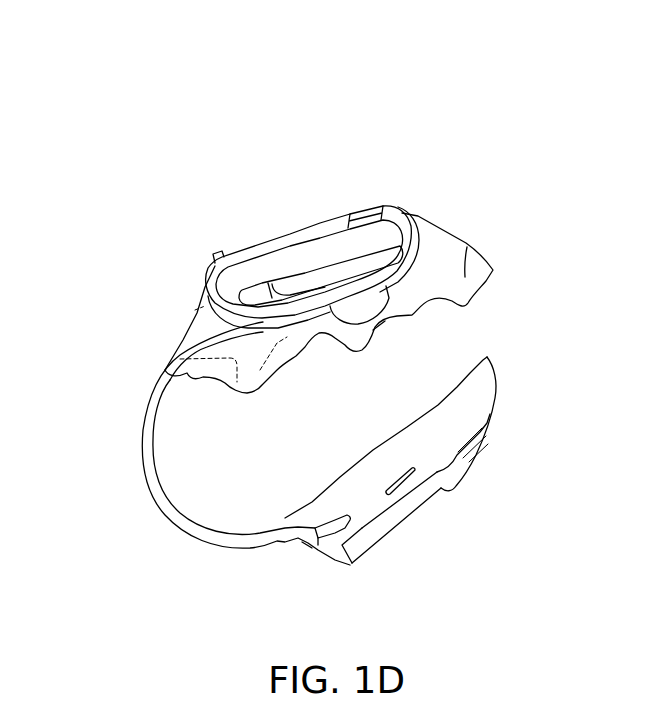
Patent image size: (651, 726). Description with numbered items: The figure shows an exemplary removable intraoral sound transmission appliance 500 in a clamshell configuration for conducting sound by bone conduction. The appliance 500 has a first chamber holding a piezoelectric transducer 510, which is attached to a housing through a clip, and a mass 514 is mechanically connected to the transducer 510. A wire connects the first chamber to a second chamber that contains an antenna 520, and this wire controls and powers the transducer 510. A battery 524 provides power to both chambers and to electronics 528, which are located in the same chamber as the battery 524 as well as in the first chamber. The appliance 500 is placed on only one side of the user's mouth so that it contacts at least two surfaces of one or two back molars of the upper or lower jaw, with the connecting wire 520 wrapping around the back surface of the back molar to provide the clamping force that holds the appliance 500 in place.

The removable intraoral sound transmission appliance 500 is at (492, 60).
The piezoelectric transducer 510 is at (400, 323).
The mass 514 is at (257, 271).
The antenna 520 is at (142, 462).
The battery 524 is at (441, 488).
The electronics 528 is at (366, 528).